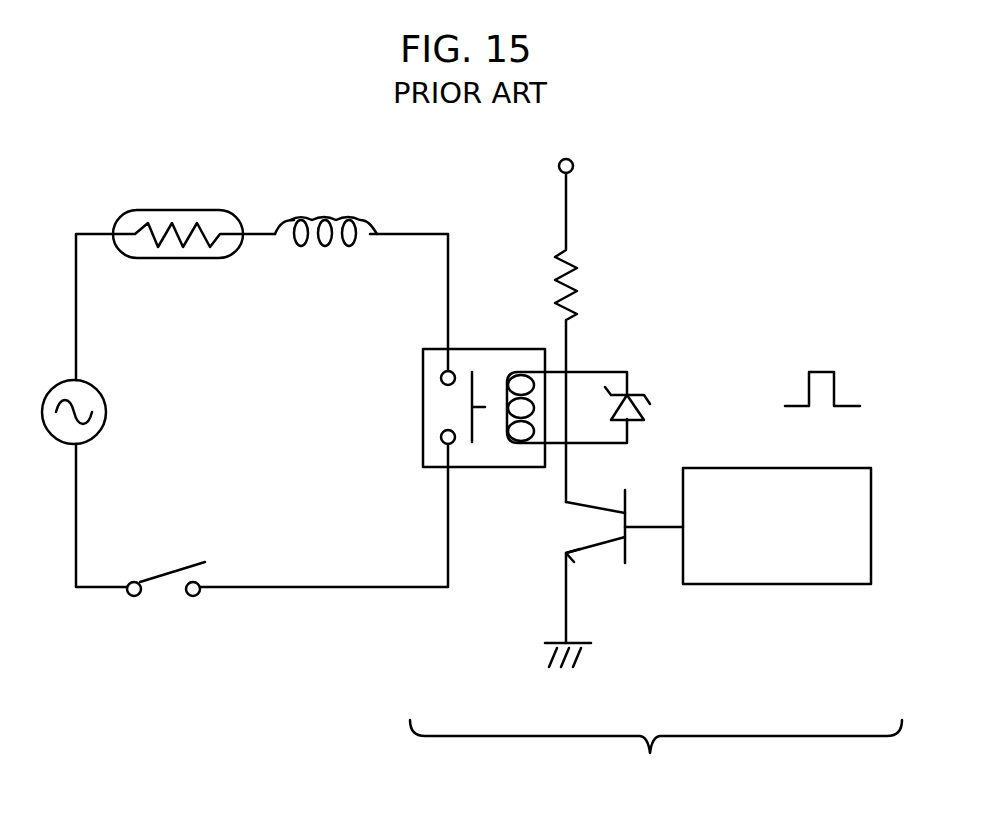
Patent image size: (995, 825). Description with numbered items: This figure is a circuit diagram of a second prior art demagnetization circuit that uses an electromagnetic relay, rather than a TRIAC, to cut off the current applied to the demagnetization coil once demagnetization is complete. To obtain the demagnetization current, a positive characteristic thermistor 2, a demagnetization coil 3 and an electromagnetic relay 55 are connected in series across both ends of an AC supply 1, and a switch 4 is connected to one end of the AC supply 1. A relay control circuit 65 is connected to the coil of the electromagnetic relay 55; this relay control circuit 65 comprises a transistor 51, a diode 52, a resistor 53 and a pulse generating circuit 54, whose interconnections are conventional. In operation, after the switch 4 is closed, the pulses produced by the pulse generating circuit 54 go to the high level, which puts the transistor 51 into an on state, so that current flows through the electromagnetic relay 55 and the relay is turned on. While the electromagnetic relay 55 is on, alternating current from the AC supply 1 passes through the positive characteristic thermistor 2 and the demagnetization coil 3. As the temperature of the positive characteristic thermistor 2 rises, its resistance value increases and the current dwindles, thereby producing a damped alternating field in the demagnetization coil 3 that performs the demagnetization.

The AC supply 1 is at (104, 403).
The positive characteristic thermistor 2 is at (188, 210).
The demagnetization coil 3 is at (342, 215).
The switch 4 is at (166, 576).
The transistor 51 is at (614, 578).
The diode 52 is at (645, 409).
The resistor 53 is at (573, 308).
The pulse generating circuit 54 is at (808, 468).
The electromagnetic relay 55 is at (508, 349).
The relay control circuit 65 is at (656, 758).